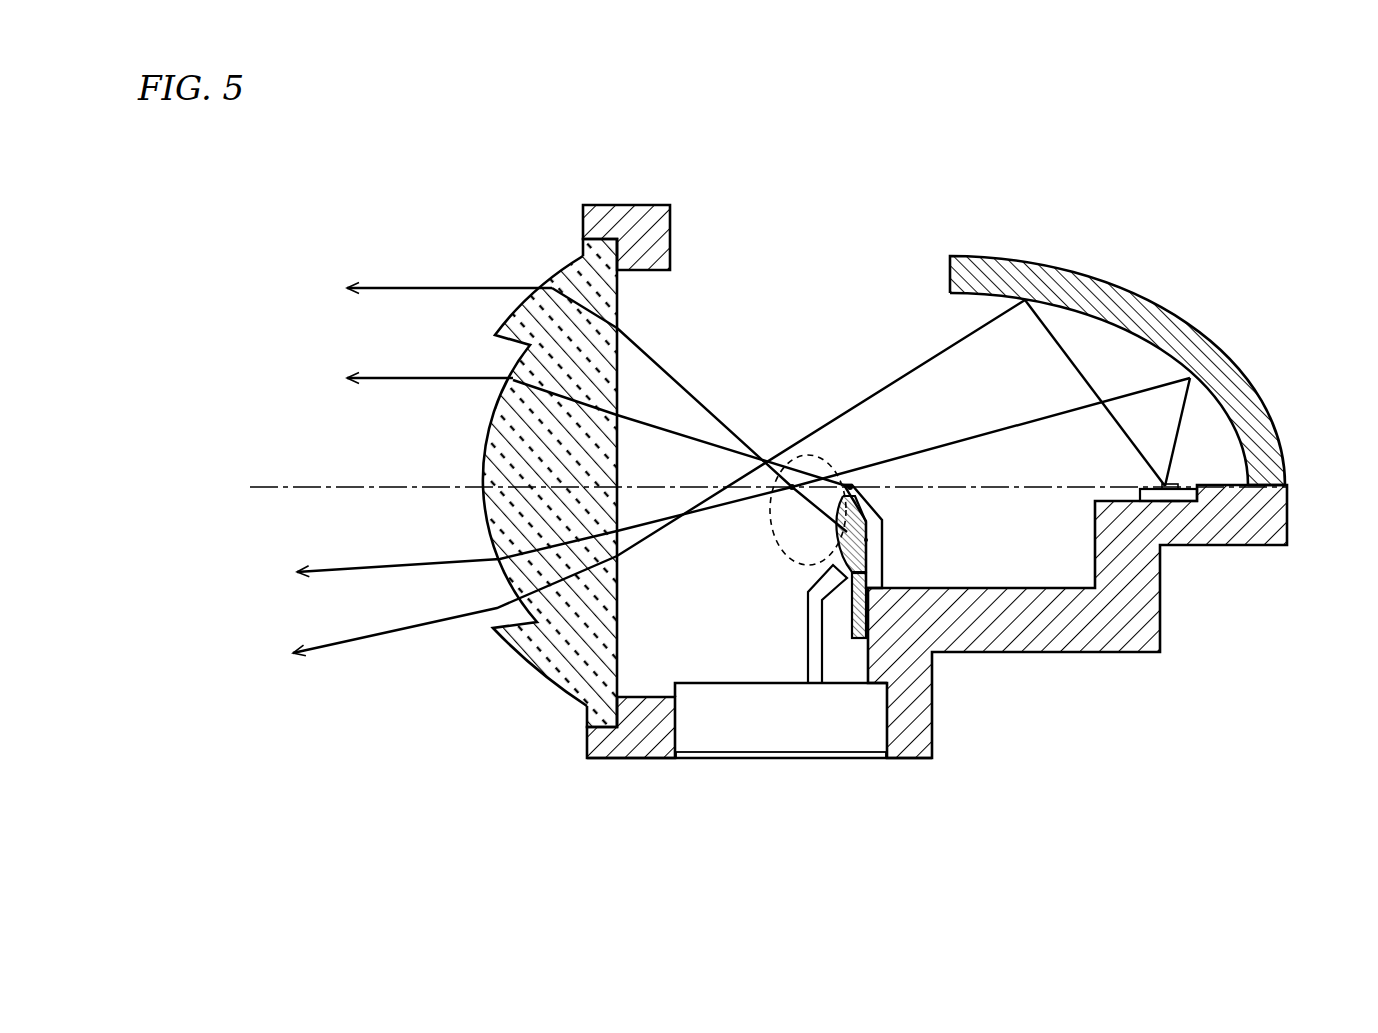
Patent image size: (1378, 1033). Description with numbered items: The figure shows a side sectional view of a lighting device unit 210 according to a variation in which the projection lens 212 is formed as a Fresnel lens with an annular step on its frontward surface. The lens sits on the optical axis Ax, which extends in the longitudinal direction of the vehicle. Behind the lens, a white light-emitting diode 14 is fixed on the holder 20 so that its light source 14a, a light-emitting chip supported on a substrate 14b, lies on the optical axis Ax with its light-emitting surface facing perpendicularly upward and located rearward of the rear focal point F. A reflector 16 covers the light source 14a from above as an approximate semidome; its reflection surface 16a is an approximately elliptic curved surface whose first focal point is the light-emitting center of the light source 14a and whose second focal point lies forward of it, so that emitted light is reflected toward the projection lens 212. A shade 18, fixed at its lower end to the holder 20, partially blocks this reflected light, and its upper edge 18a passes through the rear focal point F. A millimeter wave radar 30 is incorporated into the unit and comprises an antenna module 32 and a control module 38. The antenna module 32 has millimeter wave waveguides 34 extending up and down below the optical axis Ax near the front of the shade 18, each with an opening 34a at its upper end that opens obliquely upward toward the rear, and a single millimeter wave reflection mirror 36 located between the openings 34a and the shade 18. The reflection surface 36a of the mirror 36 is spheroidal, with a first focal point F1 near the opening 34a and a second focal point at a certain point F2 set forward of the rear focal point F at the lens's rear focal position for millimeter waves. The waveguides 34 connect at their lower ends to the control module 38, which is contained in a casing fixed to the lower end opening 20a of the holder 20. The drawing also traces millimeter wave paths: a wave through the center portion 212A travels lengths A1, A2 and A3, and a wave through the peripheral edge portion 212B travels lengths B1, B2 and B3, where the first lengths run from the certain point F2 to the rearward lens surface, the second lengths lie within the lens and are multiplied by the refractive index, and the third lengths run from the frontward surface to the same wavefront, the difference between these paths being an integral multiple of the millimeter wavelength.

The lighting device unit 210 is at (1157, 150).
The white light-emitting diode 14 is at (1152, 518).
The light source 14a is at (1173, 487).
The substrate 14b is at (1172, 501).
The reflector 16 is at (1117, 370).
The reflection surface 16a is at (1134, 340).
The shade 18 is at (892, 487).
The upper edge 18a is at (847, 484).
The holder 20 is at (935, 511).
The lower end opening 20a is at (676, 728).
The millimeter wave radar 30 is at (498, 483).
The antenna module 32 is at (834, 589).
The millimeter wave waveguide 34 is at (856, 620).
The opening 34a is at (861, 577).
The millimeter wave reflection mirror 36 is at (793, 543).
The reflection surface 36a is at (840, 522).
The control module 38 is at (836, 760).
The projection lens 212 is at (462, 481).
The center portion 212A is at (490, 498).
The peripheral edge portion 212B is at (532, 343).
The rear focal point F is at (851, 484).
The first focal point F1 is at (867, 541).
The certain point F2 is at (791, 484).
The optical axis Ax is at (319, 490).
The length from point F2 to rearward surface A1 is at (733, 445).
The length within the projection lens A2 is at (565, 389).
The length from frontward surface to wavefront A3 is at (430, 358).
The length from point F2 to rearward surface B1 is at (732, 430).
The length within the projection lens B2 is at (584, 302).
The length from frontward surface to wavefront B3 is at (449, 272).